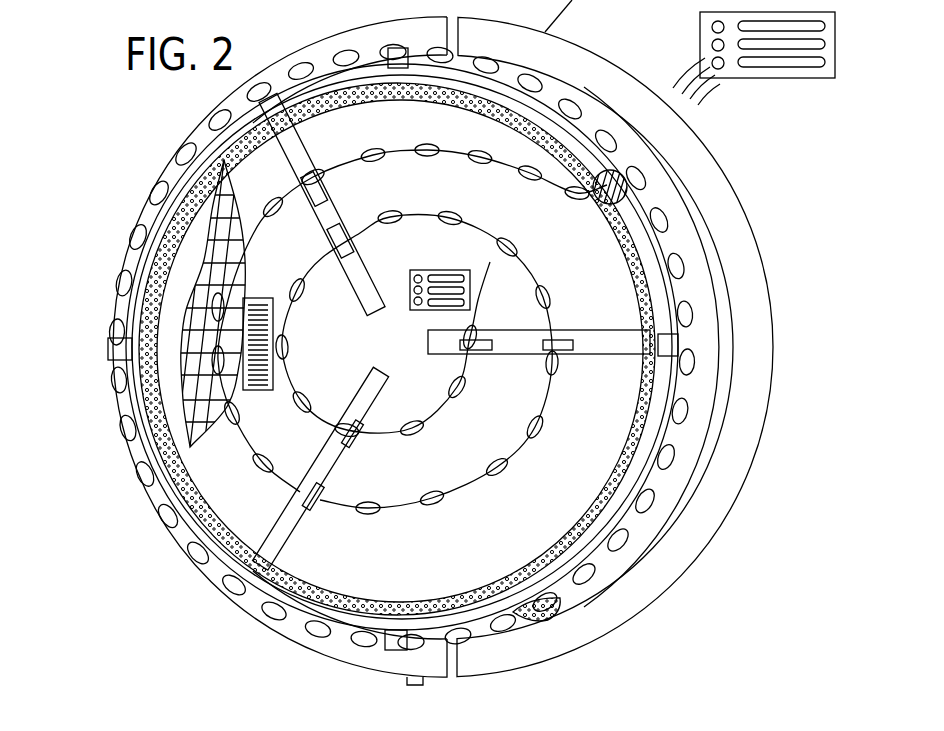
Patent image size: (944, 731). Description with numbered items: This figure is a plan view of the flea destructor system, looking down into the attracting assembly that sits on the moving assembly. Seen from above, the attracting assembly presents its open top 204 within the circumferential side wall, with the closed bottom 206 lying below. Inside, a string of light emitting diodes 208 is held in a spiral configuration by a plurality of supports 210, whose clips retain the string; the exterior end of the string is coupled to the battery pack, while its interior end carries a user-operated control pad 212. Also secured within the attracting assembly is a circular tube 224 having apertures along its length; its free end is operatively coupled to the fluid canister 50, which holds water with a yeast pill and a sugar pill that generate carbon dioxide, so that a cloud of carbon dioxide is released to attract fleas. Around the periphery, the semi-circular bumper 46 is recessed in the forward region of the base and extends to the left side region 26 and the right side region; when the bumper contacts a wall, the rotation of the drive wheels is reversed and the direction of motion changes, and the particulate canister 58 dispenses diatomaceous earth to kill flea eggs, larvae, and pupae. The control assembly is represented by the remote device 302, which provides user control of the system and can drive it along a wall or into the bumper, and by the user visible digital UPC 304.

The left side region 26 is at (401, 363).
The semi-circular bumper 46 is at (461, 351).
The fluid canister 50 is at (671, 135).
The particulate canister 58 is at (574, 636).
The open top 204 is at (453, 193).
The closed bottom 206 is at (425, 556).
The string of light emitting diodes 208 is at (356, 349).
The supports 210 is at (451, 332).
The user-operated control pad 212 is at (417, 267).
The tube 224 is at (446, 349).
The remote device 302 is at (716, 39).
The user visible digital UPC 304 is at (197, 447).